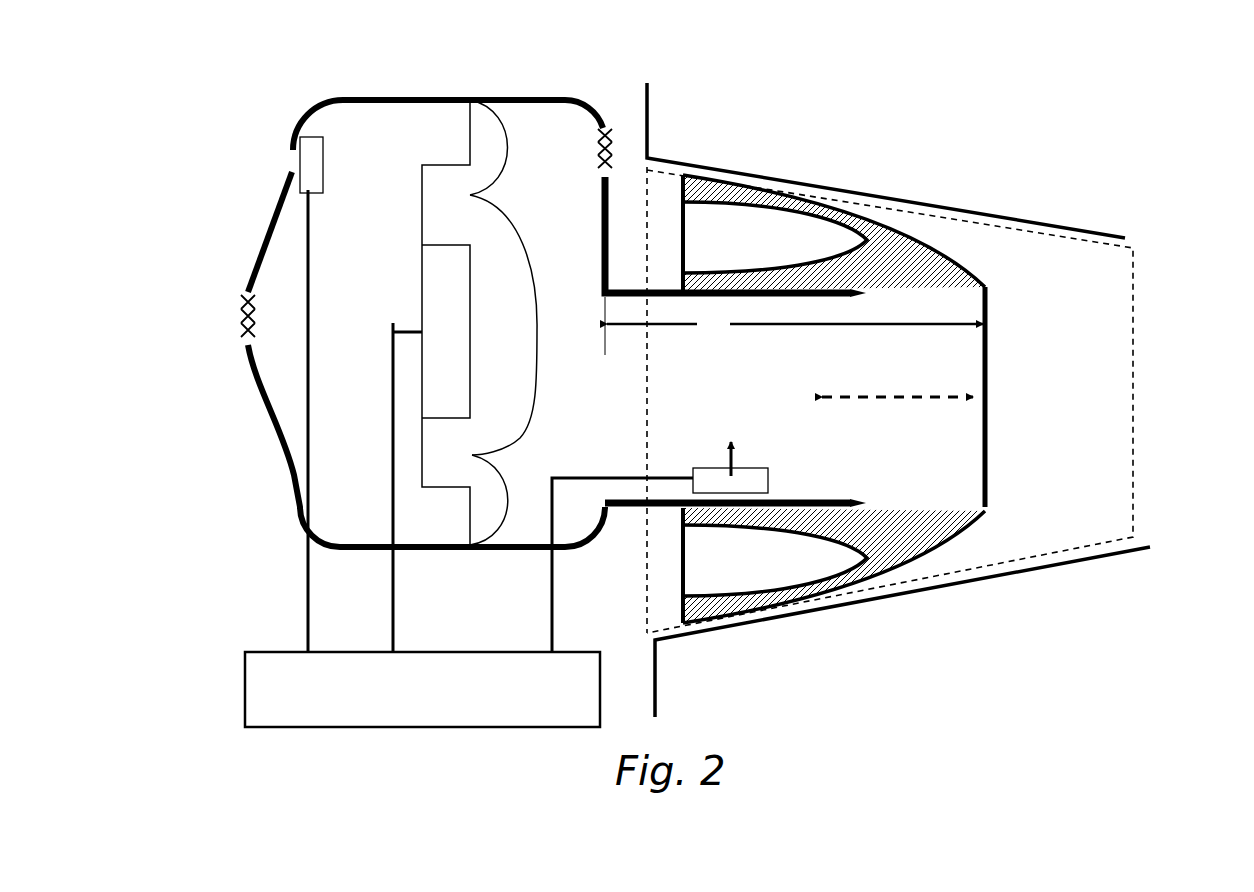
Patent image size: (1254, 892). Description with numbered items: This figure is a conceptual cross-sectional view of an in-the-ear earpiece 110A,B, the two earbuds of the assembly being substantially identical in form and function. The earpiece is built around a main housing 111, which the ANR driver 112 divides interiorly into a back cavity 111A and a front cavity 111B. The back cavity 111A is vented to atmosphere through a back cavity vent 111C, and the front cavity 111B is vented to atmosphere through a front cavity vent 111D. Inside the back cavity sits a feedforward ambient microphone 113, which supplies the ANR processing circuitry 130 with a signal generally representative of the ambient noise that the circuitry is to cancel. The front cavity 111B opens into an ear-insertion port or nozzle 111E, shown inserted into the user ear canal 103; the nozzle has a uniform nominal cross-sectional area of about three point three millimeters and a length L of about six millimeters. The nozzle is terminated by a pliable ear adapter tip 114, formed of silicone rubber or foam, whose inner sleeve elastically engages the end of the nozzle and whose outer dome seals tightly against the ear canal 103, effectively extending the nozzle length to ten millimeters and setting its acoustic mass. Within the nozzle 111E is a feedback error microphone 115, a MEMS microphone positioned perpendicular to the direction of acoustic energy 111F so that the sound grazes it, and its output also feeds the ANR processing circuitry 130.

The earpiece 110A,B is at (283, 86).
The user ear canal 103 is at (1130, 300).
The main housing 111 is at (266, 224).
The back cavity 111A is at (368, 223).
The front cavity 111B is at (563, 286).
The back cavity vent 111C is at (243, 308).
The front cavity vent 111D is at (611, 142).
The nozzle 111E is at (633, 290).
The direction of acoustic energy 111F is at (886, 395).
The ANR driver 112 is at (482, 122).
The feedforward ambient microphone 113 is at (315, 145).
The ear adapter tip 114 is at (893, 226).
The feedback error microphone 115 is at (770, 468).
The ANR processing circuitry 130 is at (250, 650).